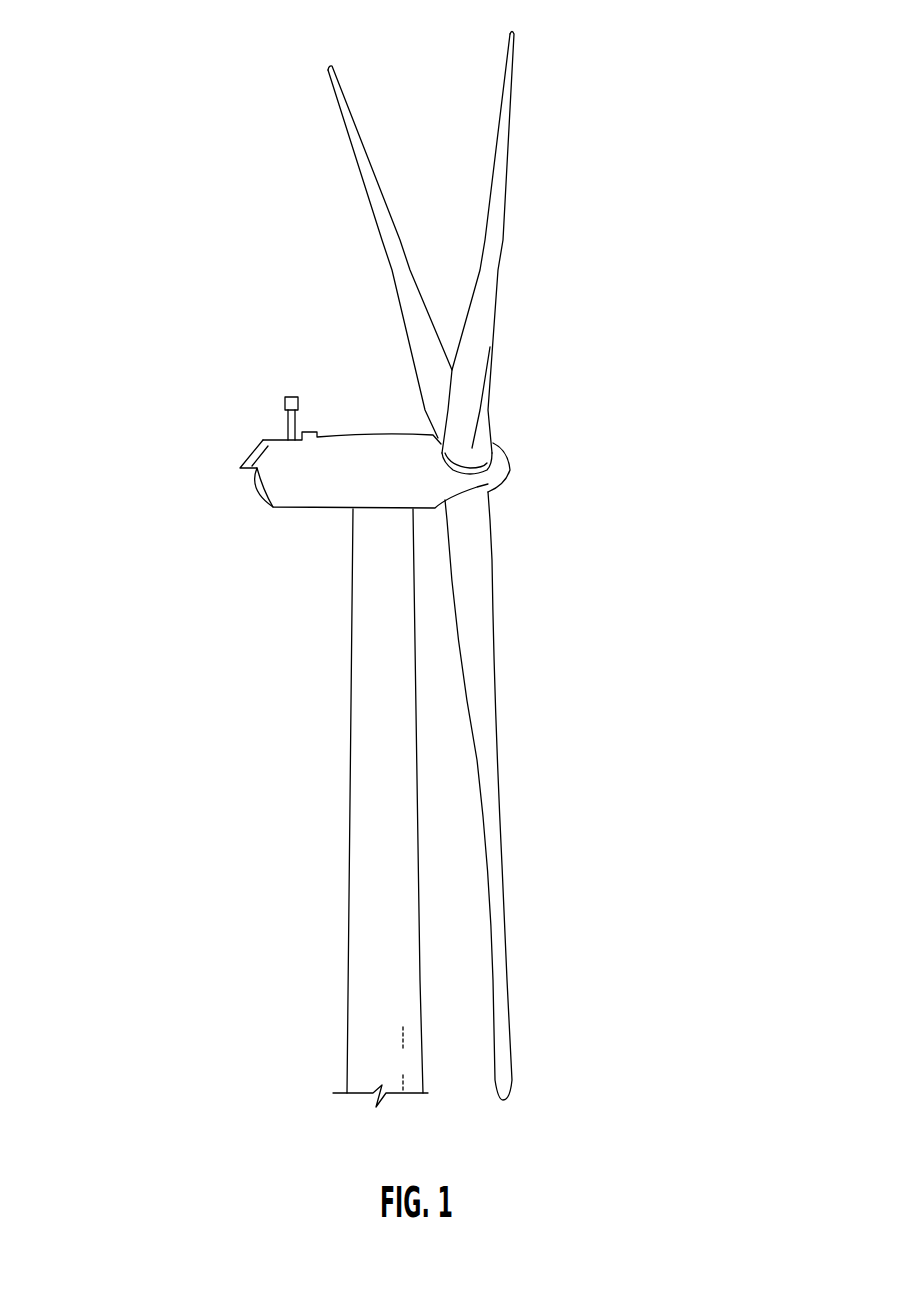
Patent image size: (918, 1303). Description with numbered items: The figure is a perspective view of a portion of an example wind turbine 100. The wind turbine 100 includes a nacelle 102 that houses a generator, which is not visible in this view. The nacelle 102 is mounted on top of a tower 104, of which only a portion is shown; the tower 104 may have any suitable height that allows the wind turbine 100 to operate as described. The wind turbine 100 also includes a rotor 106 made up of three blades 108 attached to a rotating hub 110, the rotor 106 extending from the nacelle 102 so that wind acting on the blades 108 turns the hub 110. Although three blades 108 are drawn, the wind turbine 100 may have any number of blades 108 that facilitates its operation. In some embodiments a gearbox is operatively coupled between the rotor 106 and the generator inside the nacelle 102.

The wind turbine 100 is at (223, 118).
The nacelle 102 is at (290, 508).
The tower 104 is at (350, 760).
The rotor 106 is at (598, 217).
The blade 108 is at (368, 150).
The rotating hub 110 is at (508, 480).